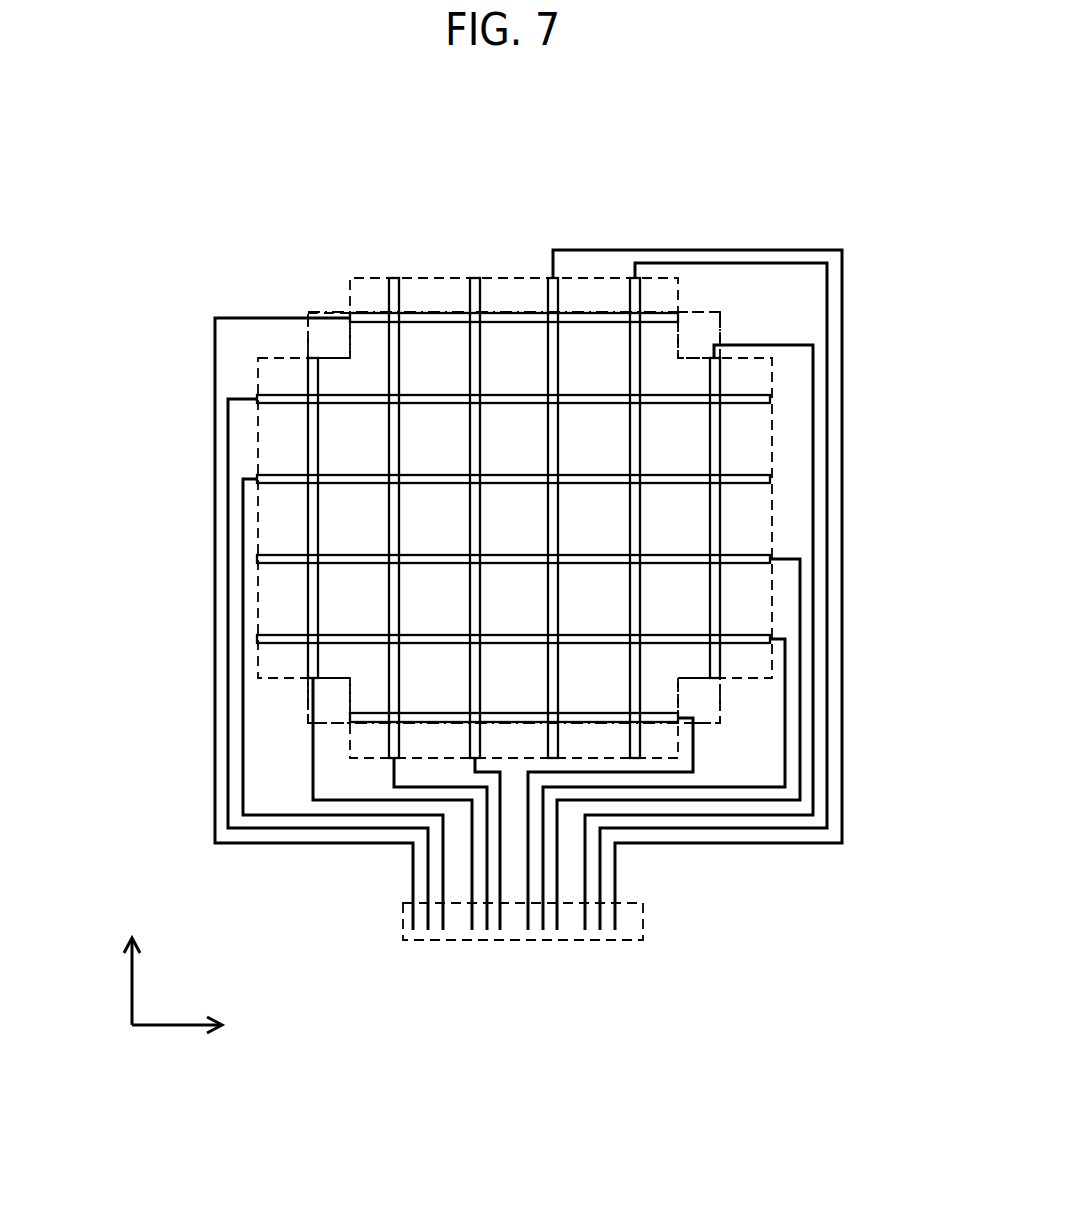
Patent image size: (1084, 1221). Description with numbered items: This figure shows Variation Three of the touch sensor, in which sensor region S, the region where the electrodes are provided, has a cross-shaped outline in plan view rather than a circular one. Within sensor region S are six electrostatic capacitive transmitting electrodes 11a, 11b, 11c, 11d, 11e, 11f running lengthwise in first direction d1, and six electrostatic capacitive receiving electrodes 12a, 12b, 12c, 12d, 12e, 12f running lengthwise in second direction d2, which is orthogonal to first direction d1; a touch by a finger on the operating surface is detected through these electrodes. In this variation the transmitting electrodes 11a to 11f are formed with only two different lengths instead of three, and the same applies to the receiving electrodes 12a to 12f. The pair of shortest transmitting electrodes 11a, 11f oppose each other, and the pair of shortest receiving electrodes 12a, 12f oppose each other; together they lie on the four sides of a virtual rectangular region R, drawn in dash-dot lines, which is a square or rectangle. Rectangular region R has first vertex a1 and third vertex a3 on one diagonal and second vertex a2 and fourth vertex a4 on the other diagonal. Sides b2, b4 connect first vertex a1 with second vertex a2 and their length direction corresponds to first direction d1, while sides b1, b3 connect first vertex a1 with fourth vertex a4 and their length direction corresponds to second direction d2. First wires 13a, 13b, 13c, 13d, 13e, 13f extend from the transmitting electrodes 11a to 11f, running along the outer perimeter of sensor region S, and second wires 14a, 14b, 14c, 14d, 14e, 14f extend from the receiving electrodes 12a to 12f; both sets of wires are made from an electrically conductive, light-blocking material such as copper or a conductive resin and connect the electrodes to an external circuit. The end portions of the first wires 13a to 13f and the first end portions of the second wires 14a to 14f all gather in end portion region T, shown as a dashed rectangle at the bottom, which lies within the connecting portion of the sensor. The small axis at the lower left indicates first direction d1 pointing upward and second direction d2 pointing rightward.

The transmitting electrode 11a is at (314, 358).
The transmitting electrode 11b is at (400, 296).
The transmitting electrode 11c is at (480, 296).
The transmitting electrode 11d is at (558, 296).
The transmitting electrode 11e is at (640, 296).
The transmitting electrode 11f is at (712, 378).
The receiving electrode 12a is at (505, 711).
The receiving electrode 12b is at (505, 633).
The receiving electrode 12c is at (505, 553).
The receiving electrode 12d is at (505, 473).
The receiving electrode 12e is at (505, 393).
The receiving electrode 12f is at (578, 325).
The first wire 13a is at (348, 801).
The first wire 13b is at (412, 789).
The first wire 13c is at (500, 904).
The first wire 13d is at (844, 484).
The first wire 13e is at (829, 533).
The first wire 13f is at (815, 577).
The second wire 14a is at (652, 774).
The second wire 14b is at (718, 789).
The second wire 14c is at (783, 802).
The second wire 14d is at (242, 578).
The second wire 14e is at (227, 533).
The second wire 14f is at (214, 487).
The sensor region S is at (540, 276).
The rectangular region R is at (320, 306).
The end portion region T is at (645, 926).
The first vertex a1 is at (310, 724).
The second vertex a2 is at (720, 726).
The third vertex a3 is at (720, 312).
The fourth vertex a4 is at (320, 312).
The side b1 is at (333, 727).
The side b2 is at (722, 328).
The side b3 is at (325, 308).
The side b4 is at (306, 702).
The first direction d1 is at (132, 994).
The second direction d2 is at (174, 1028).